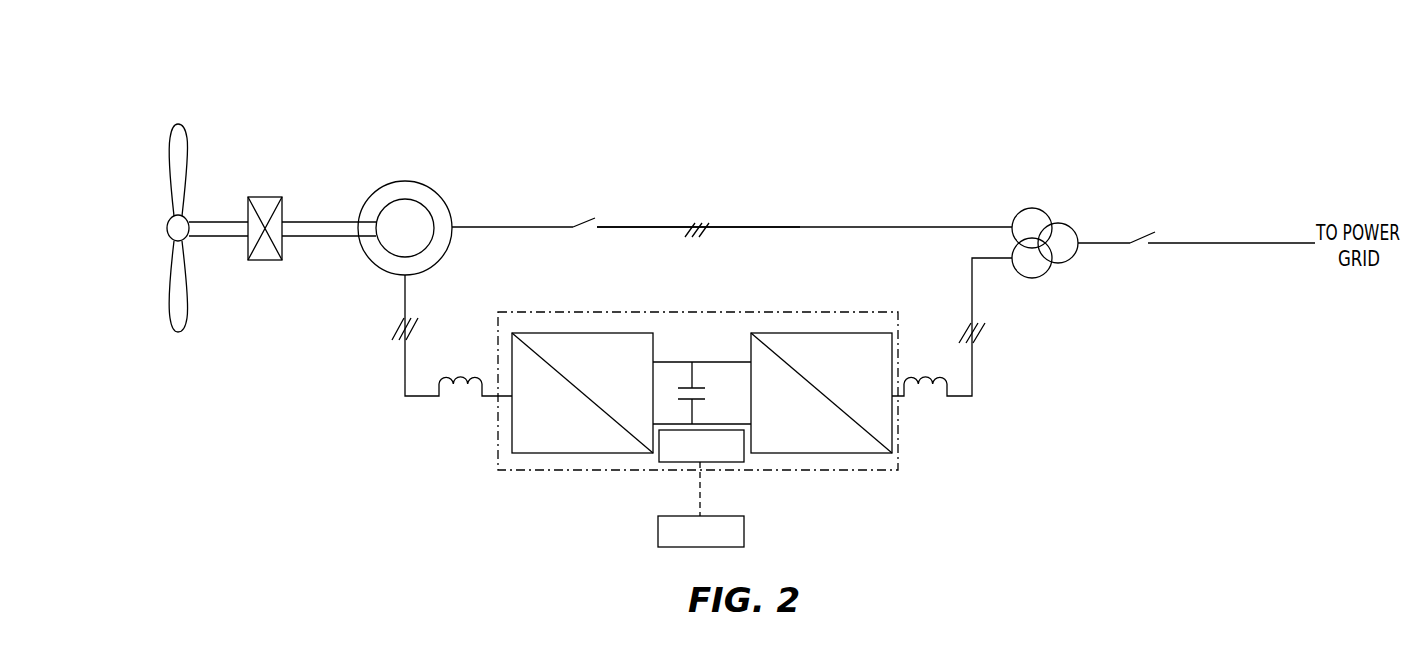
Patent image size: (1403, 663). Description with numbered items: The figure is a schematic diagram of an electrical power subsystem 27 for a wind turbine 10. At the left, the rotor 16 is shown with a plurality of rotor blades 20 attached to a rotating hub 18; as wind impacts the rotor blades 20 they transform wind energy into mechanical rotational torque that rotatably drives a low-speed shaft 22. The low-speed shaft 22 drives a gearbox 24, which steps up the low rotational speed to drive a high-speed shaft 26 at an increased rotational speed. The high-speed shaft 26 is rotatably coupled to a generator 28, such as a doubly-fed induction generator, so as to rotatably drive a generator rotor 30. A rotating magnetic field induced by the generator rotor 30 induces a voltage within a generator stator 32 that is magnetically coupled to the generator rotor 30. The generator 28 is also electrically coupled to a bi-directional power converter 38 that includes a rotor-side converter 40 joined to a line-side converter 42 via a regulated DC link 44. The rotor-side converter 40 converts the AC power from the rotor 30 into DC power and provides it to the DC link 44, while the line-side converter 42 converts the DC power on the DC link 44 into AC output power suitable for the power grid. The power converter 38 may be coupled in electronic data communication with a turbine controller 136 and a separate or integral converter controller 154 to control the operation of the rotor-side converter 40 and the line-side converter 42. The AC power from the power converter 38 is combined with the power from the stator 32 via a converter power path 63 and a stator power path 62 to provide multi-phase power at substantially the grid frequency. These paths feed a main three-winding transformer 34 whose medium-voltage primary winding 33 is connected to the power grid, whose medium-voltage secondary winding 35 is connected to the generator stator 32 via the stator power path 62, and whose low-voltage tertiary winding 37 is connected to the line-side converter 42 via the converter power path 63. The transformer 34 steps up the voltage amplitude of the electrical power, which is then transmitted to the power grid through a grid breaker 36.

The wind turbine 10 is at (173, 211).
The rotor 16 is at (162, 246).
The rotating hub 18 is at (166, 230).
The rotor blades 20 is at (178, 157).
The low-speed shaft 22 is at (205, 234).
The gearbox 24 is at (263, 197).
The high-speed shaft 26 is at (295, 237).
The generator 28 is at (404, 198).
The generator rotor 30 is at (428, 210).
The generator stator 32 is at (390, 276).
The electrical power subsystem 27 is at (740, 168).
The stator power path 62 is at (790, 227).
The bi-directional power converter 38 is at (698, 396).
The rotor-side converter 40 is at (568, 455).
The line-side converter 42 is at (835, 454).
The regulated DC link 44 is at (712, 412).
The converter controller 154 is at (701, 446).
The turbine controller 136 is at (701, 504).
The converter power path 63 is at (975, 386).
The main three-winding transformer 34 is at (1016, 234).
The secondary winding 35 is at (1015, 218).
The primary winding 33 is at (1063, 265).
The tertiary winding 37 is at (1040, 280).
The grid breaker 36 is at (1162, 228).